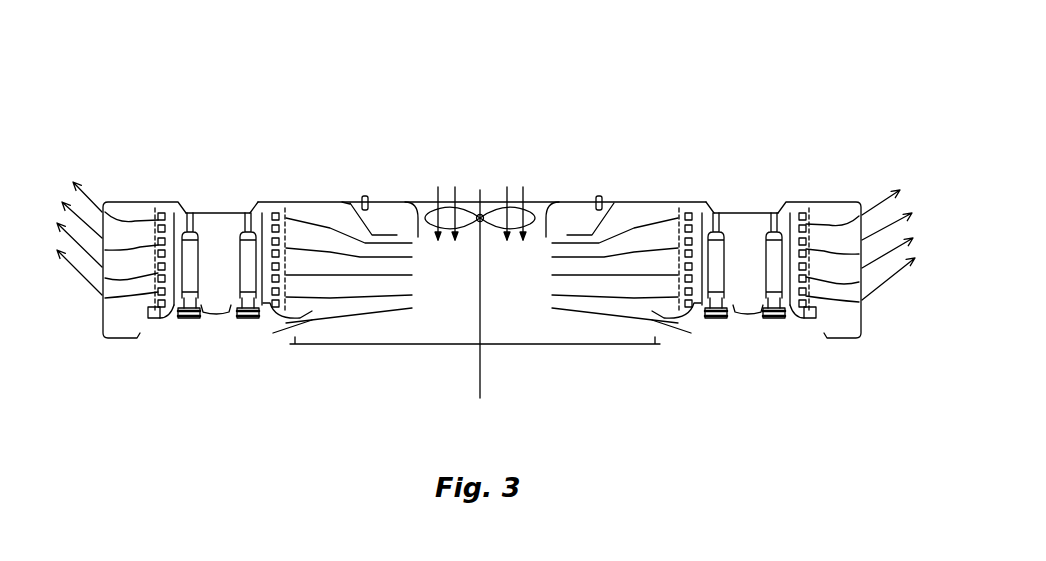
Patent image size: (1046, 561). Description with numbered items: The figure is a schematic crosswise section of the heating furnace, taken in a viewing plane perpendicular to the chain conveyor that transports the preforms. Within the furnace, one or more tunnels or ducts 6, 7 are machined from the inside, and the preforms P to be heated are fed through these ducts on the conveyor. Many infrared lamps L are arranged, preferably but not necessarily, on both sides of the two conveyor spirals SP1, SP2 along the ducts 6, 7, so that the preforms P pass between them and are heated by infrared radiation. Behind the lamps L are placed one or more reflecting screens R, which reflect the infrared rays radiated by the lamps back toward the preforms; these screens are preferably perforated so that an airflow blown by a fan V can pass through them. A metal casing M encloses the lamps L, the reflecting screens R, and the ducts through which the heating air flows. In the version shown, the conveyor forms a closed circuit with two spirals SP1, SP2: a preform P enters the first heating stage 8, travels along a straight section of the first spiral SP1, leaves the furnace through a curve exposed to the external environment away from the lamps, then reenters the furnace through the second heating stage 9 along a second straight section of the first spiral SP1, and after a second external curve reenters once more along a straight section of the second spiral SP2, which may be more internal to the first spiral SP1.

The first heating stage 8 is at (273, 74).
The second heating stage 9 is at (815, 96).
The tunnel or duct 6 is at (213, 262).
The tunnel or duct 7 is at (743, 258).
The preform P is at (200, 207).
The metal casing M is at (308, 203).
The reflecting screen R is at (158, 209).
The infrared lamp L is at (146, 305).
The first spiral SP1 is at (190, 337).
The second spiral SP2 is at (249, 335).
The fan V is at (462, 212).